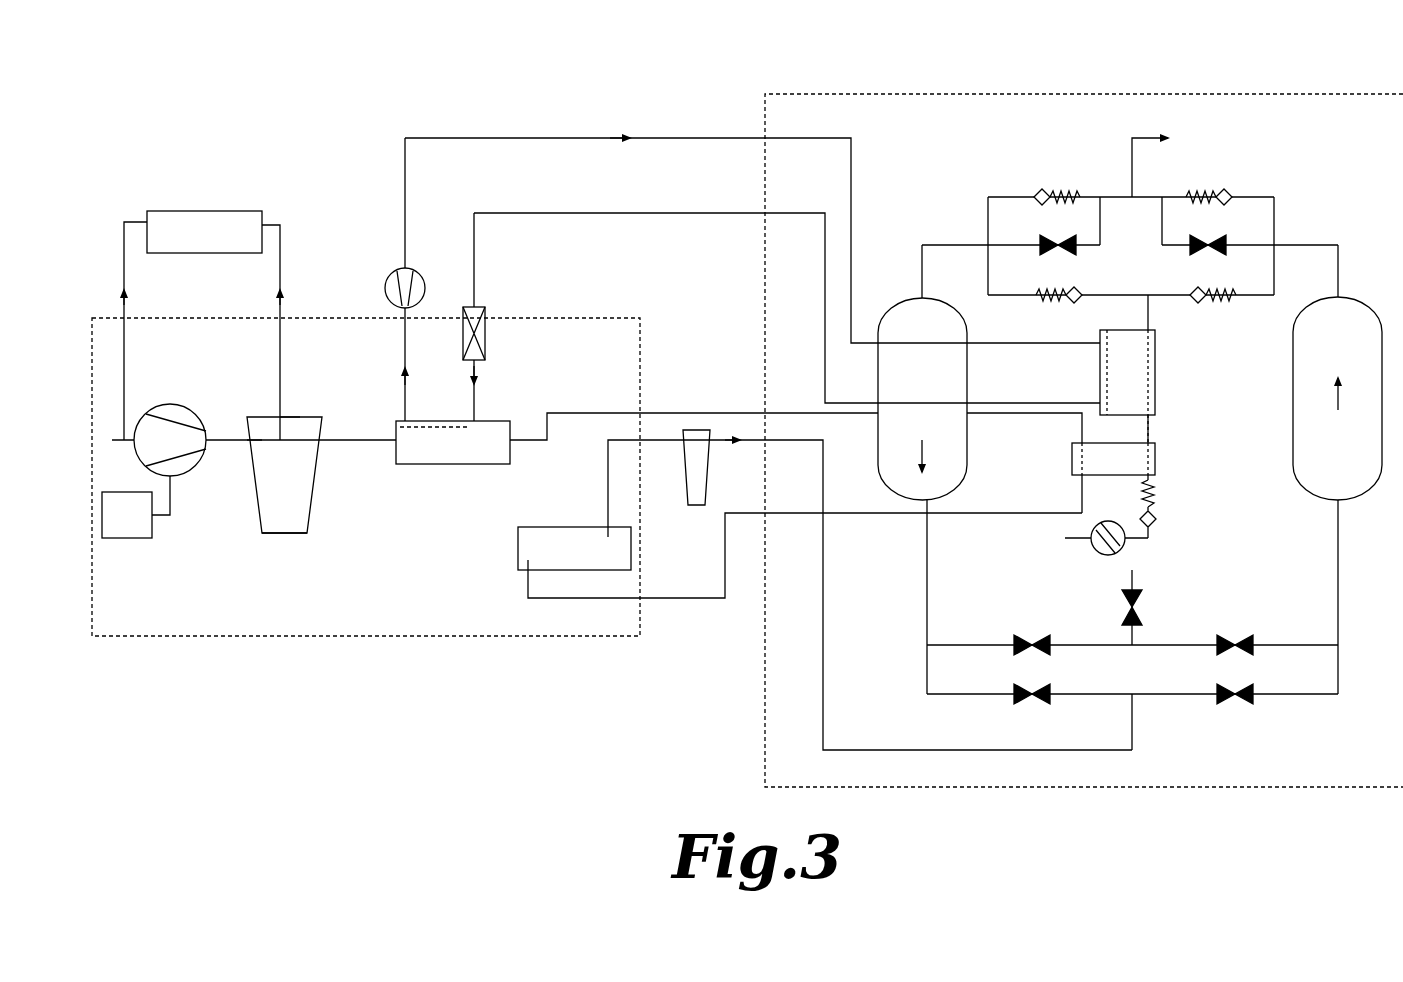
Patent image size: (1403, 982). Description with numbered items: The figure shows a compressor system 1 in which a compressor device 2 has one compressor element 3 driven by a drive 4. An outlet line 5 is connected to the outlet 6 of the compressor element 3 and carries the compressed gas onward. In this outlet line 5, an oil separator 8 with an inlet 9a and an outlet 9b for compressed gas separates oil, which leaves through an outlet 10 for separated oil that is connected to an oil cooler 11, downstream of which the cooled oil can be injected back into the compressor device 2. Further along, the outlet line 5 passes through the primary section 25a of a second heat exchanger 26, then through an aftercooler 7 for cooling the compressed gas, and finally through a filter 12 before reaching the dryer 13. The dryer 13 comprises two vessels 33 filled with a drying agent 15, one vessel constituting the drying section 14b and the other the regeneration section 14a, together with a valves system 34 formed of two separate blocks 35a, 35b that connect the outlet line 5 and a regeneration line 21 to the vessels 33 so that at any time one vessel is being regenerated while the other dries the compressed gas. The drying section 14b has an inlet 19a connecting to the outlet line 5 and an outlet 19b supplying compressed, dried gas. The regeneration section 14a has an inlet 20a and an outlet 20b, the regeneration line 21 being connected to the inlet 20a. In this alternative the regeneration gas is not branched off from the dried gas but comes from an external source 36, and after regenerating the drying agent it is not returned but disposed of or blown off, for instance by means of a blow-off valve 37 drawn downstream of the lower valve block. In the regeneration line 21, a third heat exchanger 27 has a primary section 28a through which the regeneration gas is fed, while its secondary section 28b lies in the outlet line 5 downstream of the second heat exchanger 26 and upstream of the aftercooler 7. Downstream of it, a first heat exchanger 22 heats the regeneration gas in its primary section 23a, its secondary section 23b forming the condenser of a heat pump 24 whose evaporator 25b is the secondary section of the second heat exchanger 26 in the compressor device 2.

The compressor system 1 is at (291, 91).
The compressor device 2 is at (333, 637).
The compressor element 3 is at (194, 478).
The drive 4 is at (128, 539).
The outlet line 5 is at (338, 446).
The outlet 6 is at (210, 436).
The aftercooler 7 is at (583, 527).
The oil separator 8 is at (284, 534).
The inlet 9a is at (247, 440).
The outlet 9b is at (319, 440).
The outlet for separated oil 10 is at (291, 416).
The oil cooler 11 is at (157, 222).
The filter 12 is at (695, 506).
The dryer 13 is at (925, 788).
The regeneration section 14a is at (968, 372).
The drying section 14b is at (1293, 383).
The drying agent 15 is at (1127, 369).
The inlet 19a is at (1335, 502).
The outlet 19b is at (1340, 300).
The inlet 20a is at (918, 304).
The outlet 20b is at (935, 500).
The regeneration line 21 is at (1150, 315).
The first heat exchanger 22 is at (1100, 343).
The primary section 23a is at (1155, 375).
The secondary section 23b is at (1100, 380).
The heat pump 24 is at (383, 326).
The primary section 25a is at (454, 451).
The evaporator 25b is at (466, 426).
The second heat exchanger 26 is at (509, 463).
The third heat exchanger 27 is at (1156, 462).
The primary section 28a is at (1072, 463).
The secondary section 28b is at (1156, 490).
The vessels 33 is at (968, 455).
The valves system 34 is at (1141, 441).
The block 35a is at (1207, 183).
The block 35b is at (1247, 602).
The external source 36 is at (668, 213).
The valve 37 is at (1124, 612).